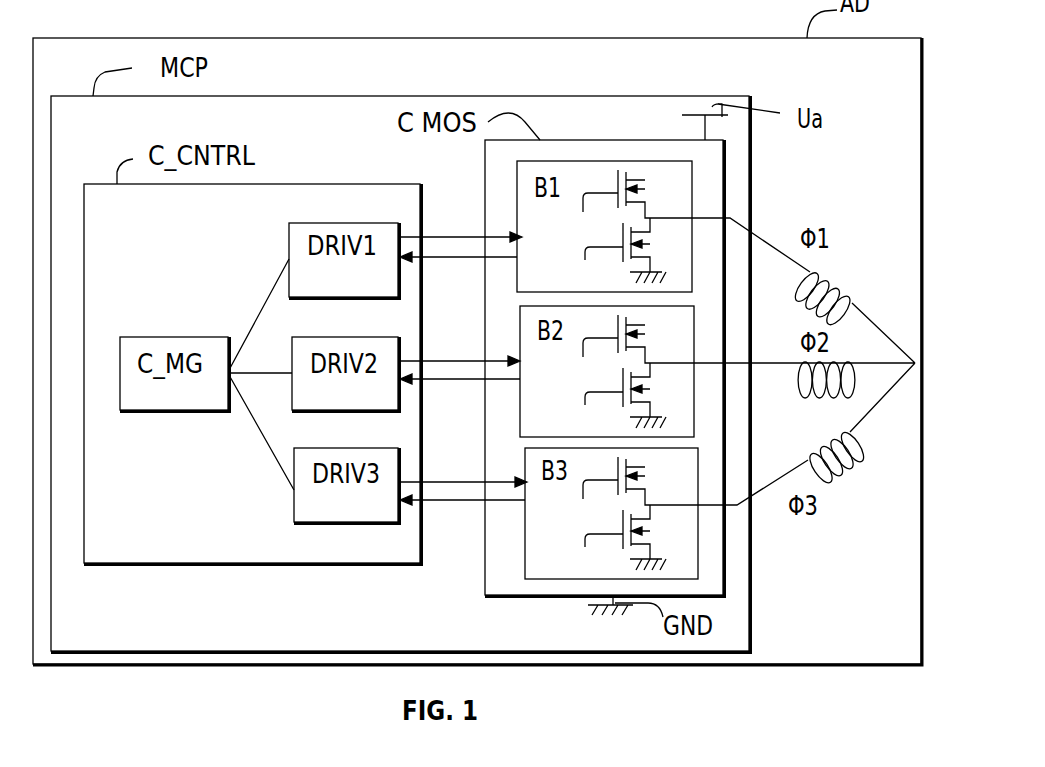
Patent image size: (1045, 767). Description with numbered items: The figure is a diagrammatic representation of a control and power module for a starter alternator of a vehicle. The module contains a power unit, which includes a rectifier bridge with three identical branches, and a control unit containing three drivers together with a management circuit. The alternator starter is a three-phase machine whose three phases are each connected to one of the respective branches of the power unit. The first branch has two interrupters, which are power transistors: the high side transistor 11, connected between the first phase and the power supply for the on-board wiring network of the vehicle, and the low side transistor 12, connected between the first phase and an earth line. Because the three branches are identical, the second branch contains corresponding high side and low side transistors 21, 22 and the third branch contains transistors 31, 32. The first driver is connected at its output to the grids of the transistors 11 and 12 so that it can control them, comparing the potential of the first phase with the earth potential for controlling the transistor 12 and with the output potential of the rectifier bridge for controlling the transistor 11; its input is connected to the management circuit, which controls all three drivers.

The first transistor 11 is at (603, 206).
The second transistor 12 is at (614, 250).
The high side transistor of second branch 21 is at (603, 351).
The low side transistor of second branch 22 is at (612, 395).
The high side transistor of third branch 31 is at (603, 493).
The low side transistor of third branch 32 is at (612, 537).